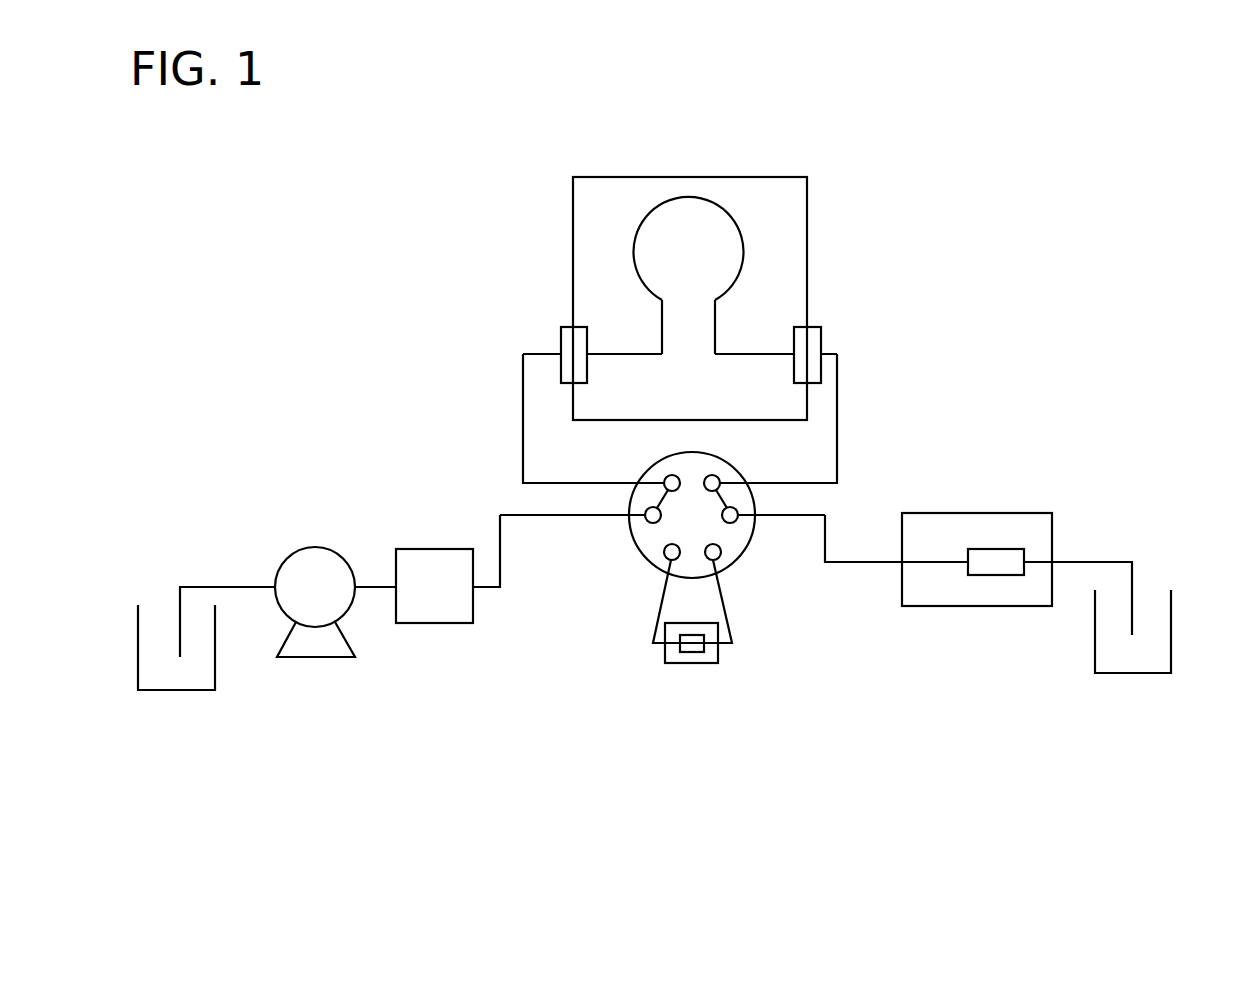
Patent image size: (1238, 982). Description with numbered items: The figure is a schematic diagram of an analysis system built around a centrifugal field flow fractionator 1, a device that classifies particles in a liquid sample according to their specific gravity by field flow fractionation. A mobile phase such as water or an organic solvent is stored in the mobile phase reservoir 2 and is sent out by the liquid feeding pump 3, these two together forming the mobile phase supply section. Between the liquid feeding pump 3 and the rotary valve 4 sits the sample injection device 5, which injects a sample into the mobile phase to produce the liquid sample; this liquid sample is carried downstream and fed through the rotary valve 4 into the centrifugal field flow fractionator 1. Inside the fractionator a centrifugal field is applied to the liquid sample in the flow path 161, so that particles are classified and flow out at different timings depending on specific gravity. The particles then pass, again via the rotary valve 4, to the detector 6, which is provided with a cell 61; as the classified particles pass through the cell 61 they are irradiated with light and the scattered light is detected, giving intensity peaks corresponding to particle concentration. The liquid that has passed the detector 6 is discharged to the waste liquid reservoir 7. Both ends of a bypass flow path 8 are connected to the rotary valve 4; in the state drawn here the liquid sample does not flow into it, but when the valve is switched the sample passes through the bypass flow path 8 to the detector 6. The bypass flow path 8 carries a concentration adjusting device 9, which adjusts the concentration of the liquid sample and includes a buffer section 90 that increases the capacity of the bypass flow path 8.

The centrifugal field flow fractionator 1 is at (750, 176).
The flow path 161 is at (742, 263).
The mobile phase reservoir 2 is at (180, 692).
The liquid feeding pump 3 is at (317, 658).
The rotary valve 4 is at (632, 542).
The sample injection device 5 is at (435, 625).
The detector 6 is at (928, 607).
The cell 61 is at (988, 548).
The waste liquid reservoir 7 is at (1093, 647).
The bypass flow path 8 is at (720, 590).
The concentration adjusting device 9 is at (720, 652).
The buffer section 90 is at (692, 653).